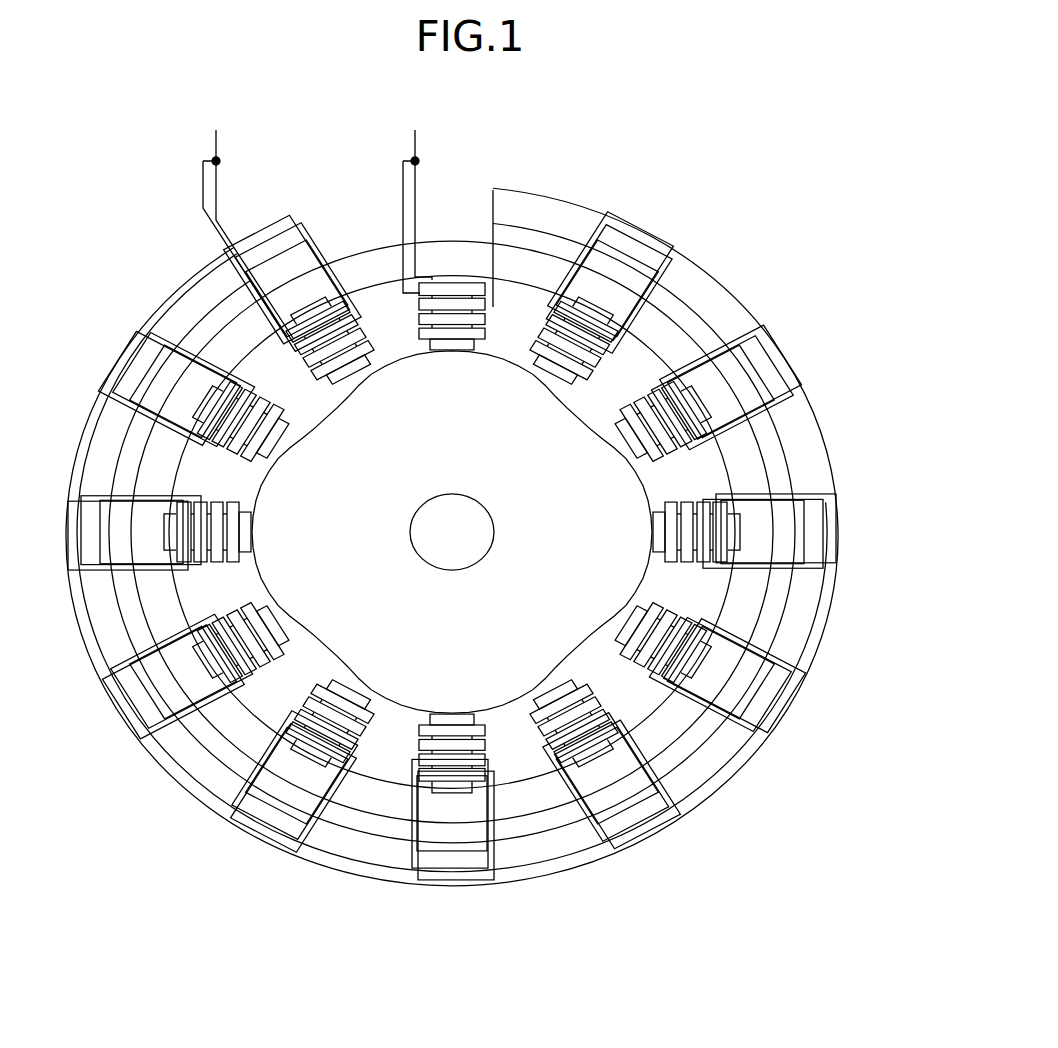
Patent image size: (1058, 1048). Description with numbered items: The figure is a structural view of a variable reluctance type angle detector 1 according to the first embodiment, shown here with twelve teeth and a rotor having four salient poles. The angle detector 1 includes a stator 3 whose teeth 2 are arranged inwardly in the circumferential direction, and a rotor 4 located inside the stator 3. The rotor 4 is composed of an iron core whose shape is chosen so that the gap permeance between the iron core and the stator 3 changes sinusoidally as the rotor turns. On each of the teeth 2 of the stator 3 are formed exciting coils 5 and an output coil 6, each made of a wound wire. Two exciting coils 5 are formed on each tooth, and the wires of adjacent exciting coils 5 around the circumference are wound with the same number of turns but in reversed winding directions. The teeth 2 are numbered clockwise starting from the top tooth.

The variable reluctance type angle detector 1 is at (653, 188).
The teeth 2 is at (700, 397).
The stator 3 is at (652, 318).
The rotor 4 is at (596, 545).
The exciting coils 5 is at (683, 645).
The output coil 6 is at (623, 653).